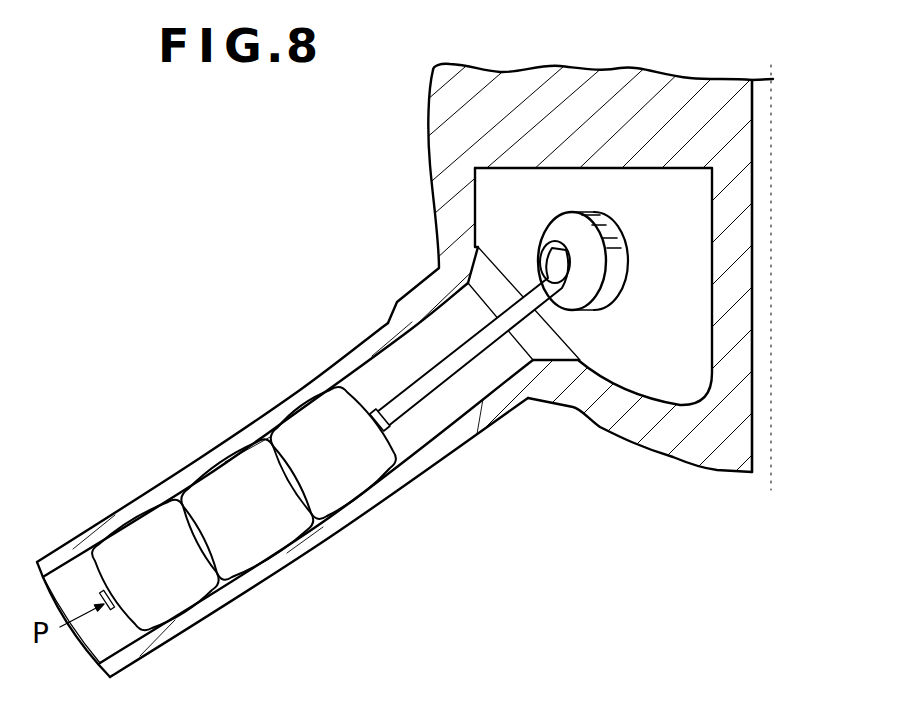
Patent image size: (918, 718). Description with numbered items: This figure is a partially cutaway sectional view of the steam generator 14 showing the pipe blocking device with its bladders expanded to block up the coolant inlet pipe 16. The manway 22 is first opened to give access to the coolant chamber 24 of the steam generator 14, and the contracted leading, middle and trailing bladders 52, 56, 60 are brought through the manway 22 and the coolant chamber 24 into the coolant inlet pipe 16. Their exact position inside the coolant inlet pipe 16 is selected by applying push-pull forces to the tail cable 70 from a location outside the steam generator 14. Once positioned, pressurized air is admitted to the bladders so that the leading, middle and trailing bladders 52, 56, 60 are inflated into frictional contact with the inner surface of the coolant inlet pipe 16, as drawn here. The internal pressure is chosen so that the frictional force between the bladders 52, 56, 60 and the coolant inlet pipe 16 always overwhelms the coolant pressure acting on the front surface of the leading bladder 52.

The steam generator 14 is at (443, 138).
The coolant inlet pipe 16 is at (284, 411).
The manway 22 is at (617, 238).
The coolant chamber 24 is at (690, 330).
The leading bladder 52 is at (177, 598).
The middle bladder 56 is at (270, 540).
The trailing bladder 60 is at (355, 480).
The tail cable 70 is at (421, 396).